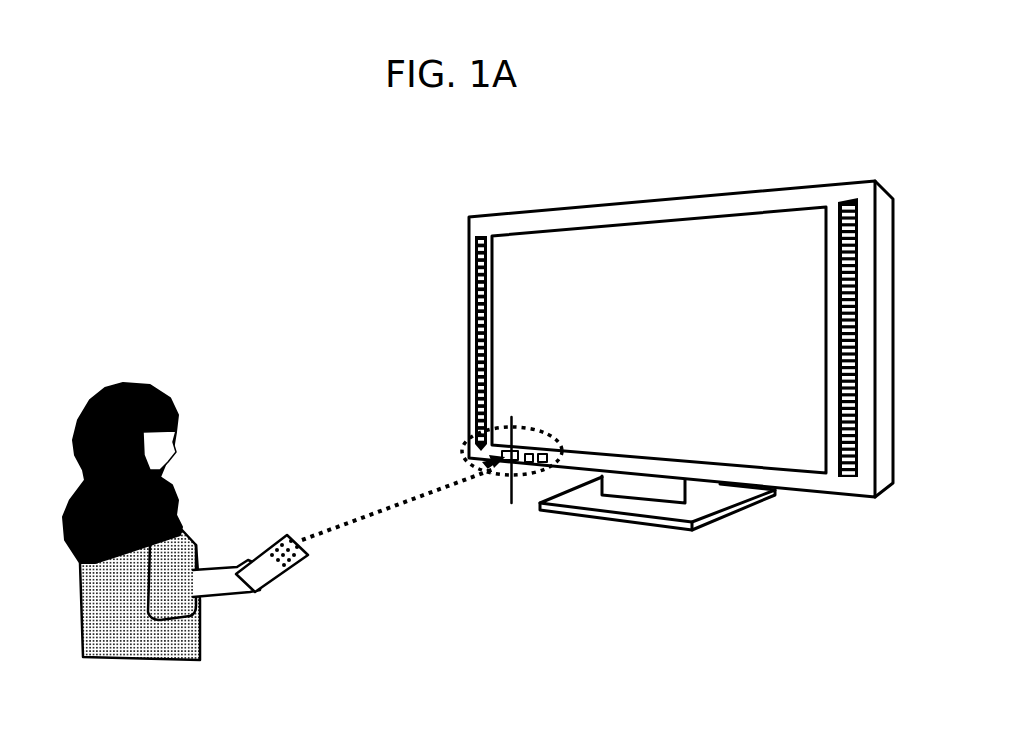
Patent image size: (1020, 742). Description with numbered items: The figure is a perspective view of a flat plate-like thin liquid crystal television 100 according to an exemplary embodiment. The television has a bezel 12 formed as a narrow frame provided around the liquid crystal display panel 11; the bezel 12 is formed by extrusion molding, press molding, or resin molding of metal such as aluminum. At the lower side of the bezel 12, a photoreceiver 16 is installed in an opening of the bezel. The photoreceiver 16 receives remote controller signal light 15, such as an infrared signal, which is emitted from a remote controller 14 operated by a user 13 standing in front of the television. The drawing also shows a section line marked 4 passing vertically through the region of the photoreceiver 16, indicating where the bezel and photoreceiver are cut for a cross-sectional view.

The thin liquid crystal television 100 is at (835, 183).
The bezel 12 is at (584, 223).
The liquid crystal display panel 11 is at (772, 232).
The photoreceiver 16 is at (518, 473).
The cross-section line 4 is at (513, 463).
The remote controller signal light 15 is at (350, 523).
The user 13 is at (103, 387).
The remote controller 14 is at (295, 563).